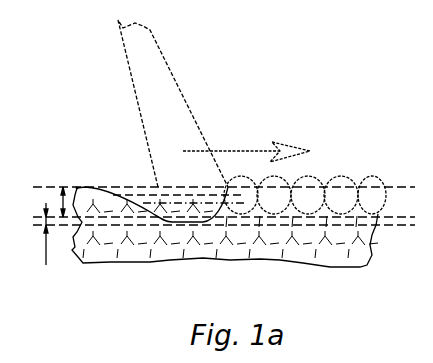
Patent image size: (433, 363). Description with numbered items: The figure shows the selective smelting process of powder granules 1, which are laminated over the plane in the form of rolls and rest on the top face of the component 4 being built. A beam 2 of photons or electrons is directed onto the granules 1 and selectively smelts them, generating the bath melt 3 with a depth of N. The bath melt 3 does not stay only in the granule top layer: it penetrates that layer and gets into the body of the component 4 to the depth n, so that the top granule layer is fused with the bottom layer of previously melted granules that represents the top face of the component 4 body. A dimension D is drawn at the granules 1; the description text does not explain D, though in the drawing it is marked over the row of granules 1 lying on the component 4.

The powder (granules) 1 is at (334, 188).
The beam of photons or electrons 2 is at (168, 108).
The bath melt 3 is at (182, 205).
The component 4 is at (278, 242).
The depth of the bath melt N is at (122, 178).
The ball diameter D is at (432, 141).
The depth of penetration into the component n is at (32, 234).